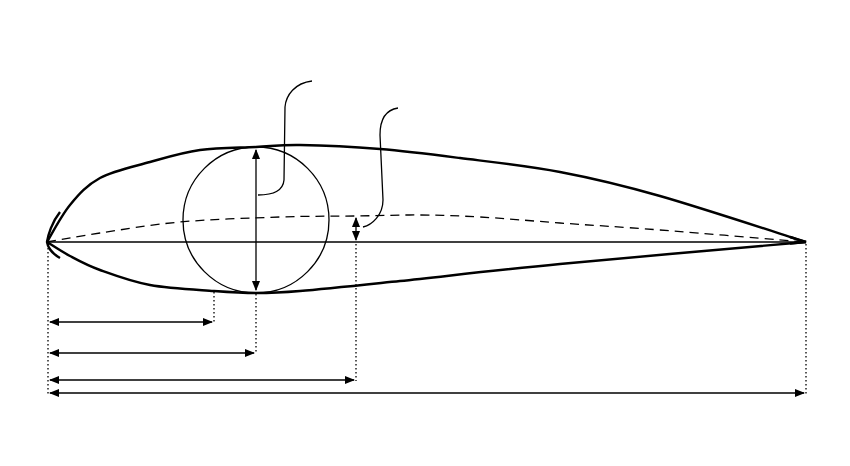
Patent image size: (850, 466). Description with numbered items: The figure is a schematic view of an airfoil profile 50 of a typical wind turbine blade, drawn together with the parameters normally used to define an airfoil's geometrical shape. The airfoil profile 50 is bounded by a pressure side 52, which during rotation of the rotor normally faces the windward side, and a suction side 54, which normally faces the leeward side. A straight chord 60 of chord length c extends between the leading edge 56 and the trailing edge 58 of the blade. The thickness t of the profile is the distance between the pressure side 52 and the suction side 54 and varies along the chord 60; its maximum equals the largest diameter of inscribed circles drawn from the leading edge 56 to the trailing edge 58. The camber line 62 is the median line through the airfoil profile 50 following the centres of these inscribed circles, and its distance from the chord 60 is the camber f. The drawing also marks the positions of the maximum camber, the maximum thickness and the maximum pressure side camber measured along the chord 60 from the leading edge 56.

The airfoil profile 50 is at (402, 73).
The pressure side 52 is at (577, 265).
The suction side 54 is at (520, 163).
The leading edge 56 is at (47, 242).
The trailing edge 58 is at (806, 241).
The chord 60 is at (613, 240).
The camber line 62 is at (418, 215).